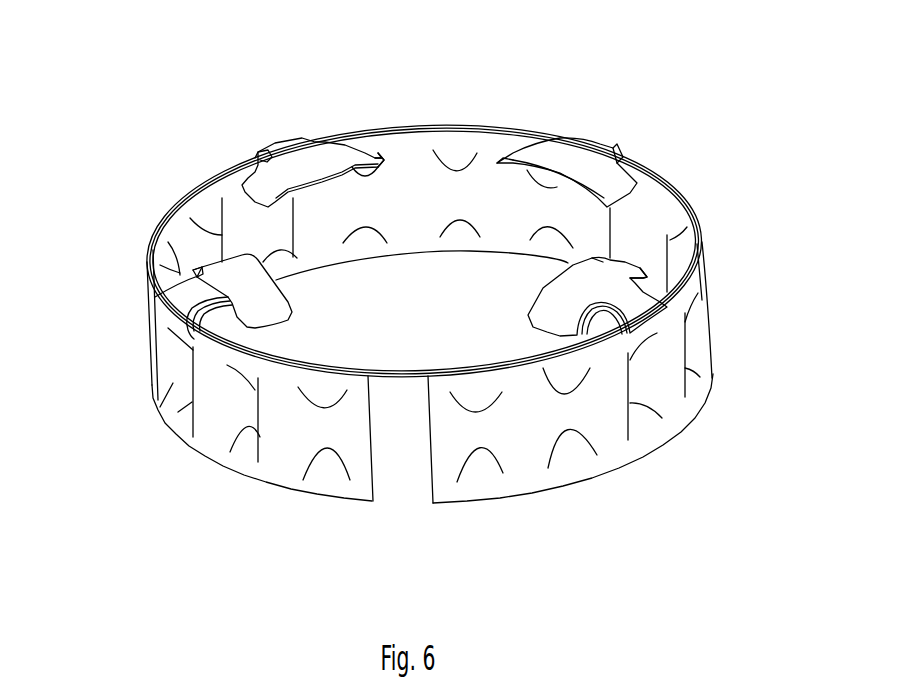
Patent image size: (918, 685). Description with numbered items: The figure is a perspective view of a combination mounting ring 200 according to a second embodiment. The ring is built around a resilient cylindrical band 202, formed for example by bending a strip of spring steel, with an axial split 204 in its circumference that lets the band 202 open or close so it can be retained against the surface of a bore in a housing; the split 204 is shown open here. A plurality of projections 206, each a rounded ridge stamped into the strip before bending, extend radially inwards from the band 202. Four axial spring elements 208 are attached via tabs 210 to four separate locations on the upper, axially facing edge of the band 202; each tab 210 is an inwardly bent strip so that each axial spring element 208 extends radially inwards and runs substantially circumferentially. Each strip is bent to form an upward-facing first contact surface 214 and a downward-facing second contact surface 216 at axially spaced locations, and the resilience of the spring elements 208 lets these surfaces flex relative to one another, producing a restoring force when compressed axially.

The combination mounting ring 200 is at (730, 58).
The resilient cylindrical band 202 is at (623, 467).
The axial split 204 is at (405, 487).
The projections 206 is at (230, 413).
The axial spring elements 208 is at (310, 157).
The tabs 210 is at (272, 150).
The first contact surface 214 is at (220, 264).
The second contact surface 216 is at (295, 323).